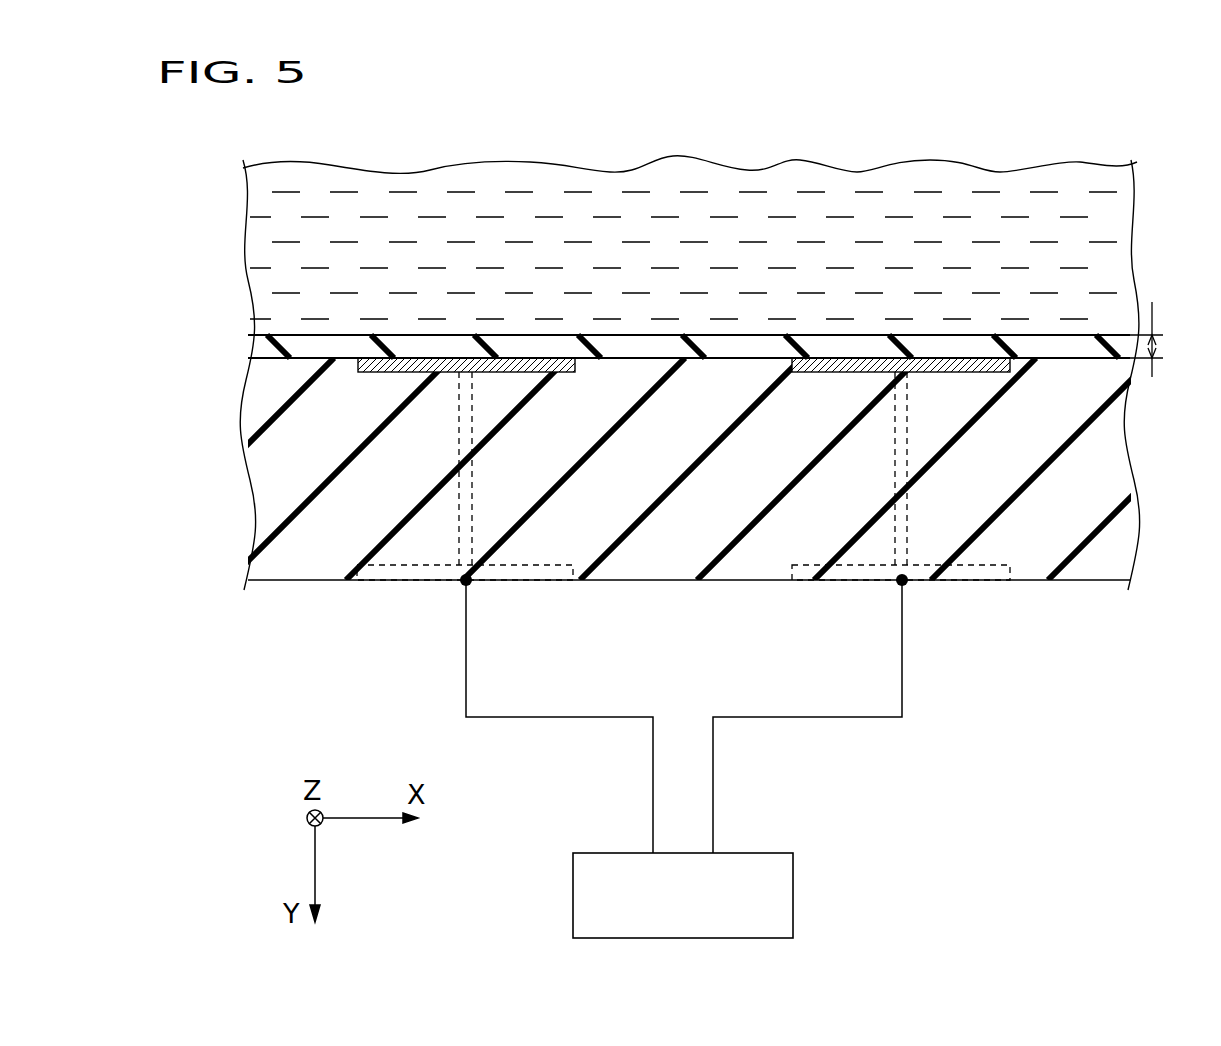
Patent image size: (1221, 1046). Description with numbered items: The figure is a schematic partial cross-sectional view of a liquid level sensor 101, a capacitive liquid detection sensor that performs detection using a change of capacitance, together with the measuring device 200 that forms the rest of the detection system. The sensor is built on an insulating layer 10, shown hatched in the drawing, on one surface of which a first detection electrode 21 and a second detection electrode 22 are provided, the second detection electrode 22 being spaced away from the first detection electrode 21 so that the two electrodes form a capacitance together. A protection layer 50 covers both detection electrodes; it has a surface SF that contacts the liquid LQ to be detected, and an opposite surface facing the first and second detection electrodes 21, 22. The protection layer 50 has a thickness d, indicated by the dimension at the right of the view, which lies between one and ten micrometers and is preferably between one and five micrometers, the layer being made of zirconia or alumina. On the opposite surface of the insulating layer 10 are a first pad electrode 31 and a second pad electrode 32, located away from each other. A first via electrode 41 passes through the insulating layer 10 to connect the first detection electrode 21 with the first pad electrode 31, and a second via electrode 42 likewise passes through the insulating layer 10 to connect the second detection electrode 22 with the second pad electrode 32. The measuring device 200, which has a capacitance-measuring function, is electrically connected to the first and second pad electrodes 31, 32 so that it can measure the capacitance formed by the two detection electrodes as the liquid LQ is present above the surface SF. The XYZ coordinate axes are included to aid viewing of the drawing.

The insulating layer 10 is at (268, 460).
The first detection electrode 21 is at (530, 358).
The second detection electrode 22 is at (849, 358).
The first pad electrode 31 is at (533, 570).
The second pad electrode 32 is at (852, 570).
The first via electrode 41 is at (465, 523).
The second via electrode 42 is at (900, 523).
The protection layer 50 is at (263, 350).
The liquid level sensor 101 is at (348, 625).
The measuring device 200 is at (752, 853).
The liquid LQ is at (268, 250).
The surface SF is at (323, 318).
The thickness d is at (1152, 313).